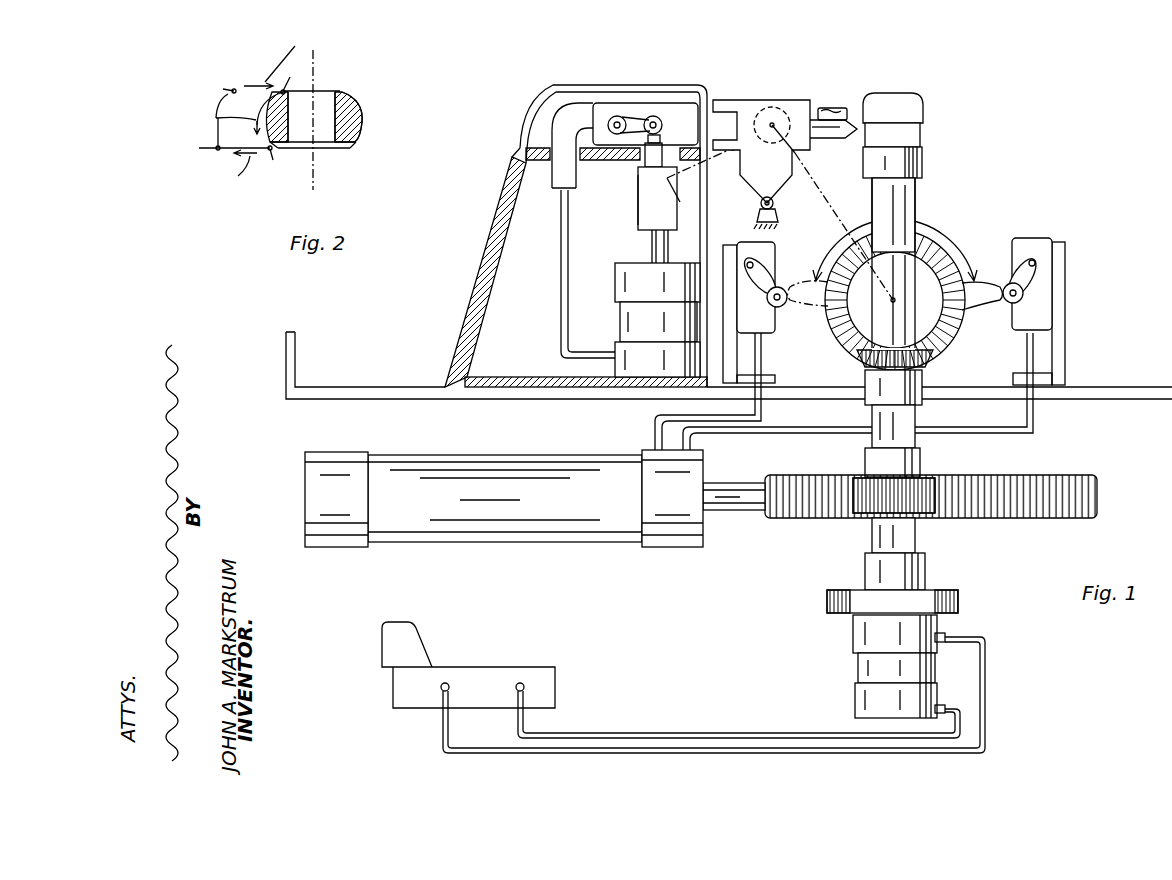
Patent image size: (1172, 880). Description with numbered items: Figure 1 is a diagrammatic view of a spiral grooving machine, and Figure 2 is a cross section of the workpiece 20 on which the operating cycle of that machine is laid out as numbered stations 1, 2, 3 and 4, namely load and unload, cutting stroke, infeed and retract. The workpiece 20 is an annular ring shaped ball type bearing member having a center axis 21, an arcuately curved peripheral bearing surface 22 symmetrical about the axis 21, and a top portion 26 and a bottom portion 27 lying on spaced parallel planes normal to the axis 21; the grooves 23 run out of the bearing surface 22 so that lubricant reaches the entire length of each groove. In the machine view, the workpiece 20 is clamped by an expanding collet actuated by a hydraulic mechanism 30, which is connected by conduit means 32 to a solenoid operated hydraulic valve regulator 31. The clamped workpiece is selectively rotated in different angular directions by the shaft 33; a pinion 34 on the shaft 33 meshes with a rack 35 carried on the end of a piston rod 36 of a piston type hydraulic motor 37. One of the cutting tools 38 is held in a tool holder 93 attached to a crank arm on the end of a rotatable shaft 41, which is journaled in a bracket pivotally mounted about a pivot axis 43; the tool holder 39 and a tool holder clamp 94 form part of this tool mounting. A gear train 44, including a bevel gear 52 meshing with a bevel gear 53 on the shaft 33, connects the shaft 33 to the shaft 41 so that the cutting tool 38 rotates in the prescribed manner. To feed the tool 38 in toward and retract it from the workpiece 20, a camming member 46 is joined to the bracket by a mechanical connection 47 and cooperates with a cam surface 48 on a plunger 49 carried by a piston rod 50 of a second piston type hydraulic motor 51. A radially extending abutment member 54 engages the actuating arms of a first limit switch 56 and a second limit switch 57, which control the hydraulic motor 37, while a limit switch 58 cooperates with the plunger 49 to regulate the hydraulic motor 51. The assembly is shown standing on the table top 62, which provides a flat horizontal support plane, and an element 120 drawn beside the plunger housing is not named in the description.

In FIG. 2, the load and unload step 1 is at (173, 156).
In FIG. 2, the cutting stroke step 2 is at (192, 118).
In FIG. 2, the infeed step 3 is at (262, 77).
In FIG. 2, the retract step 4 is at (253, 171).
In FIG. 2, the workpiece 20 is at (358, 120).
In FIG. 1, the workpiece 20 is at (906, 119).
In FIG. 2, the center axis 21 is at (313, 181).
In FIG. 2, the arcuately curved peripheral bearing surface 22 is at (360, 140).
In FIG. 2, the grooves 23 is at (356, 103).
In FIG. 2, the top portion 26 is at (338, 92).
In FIG. 2, the bottom portion 27 is at (342, 147).
In FIG. 1, the hydraulic mechanism 30 is at (945, 628).
In FIG. 1, the solenoid operated hydraulic valve regulator 31 is at (483, 668).
In FIG. 1, the conduit means 32 is at (632, 741).
In FIG. 1, the shaft 33 is at (916, 206).
In FIG. 1, the pinion 34 is at (930, 478).
In FIG. 1, the rack 35 is at (1010, 477).
In FIG. 1, the piston rod 36 is at (727, 507).
In FIG. 1, the piston type hydraulic motor 37 is at (518, 542).
In FIG. 1, the cutting tool 38 is at (851, 118).
In FIG. 1, the tool holder 39 is at (760, 108).
In FIG. 1, the rotatable shaft 41 is at (761, 151).
In FIG. 1, the pivot axis 43 is at (774, 205).
In FIG. 1, the gear train 44 is at (826, 200).
In FIG. 1, the camming member 46 is at (676, 200).
In FIG. 1, the mechanical connection 47 is at (718, 160).
In FIG. 1, the cam surface 48 is at (657, 182).
In FIG. 1, the plunger 49 is at (639, 190).
In FIG. 1, the piston rod 50 is at (670, 253).
In FIG. 1, the piston type hydraulic motor 51 is at (622, 325).
In FIG. 1, the bevel gear 52 is at (950, 340).
In FIG. 1, the bevel gear 53 is at (926, 360).
In FIG. 1, the radially extending abutment member 54 is at (975, 298).
In FIG. 1, the first limit switch 56 is at (1050, 280).
In FIG. 1, the second limit switch 57 is at (776, 322).
In FIG. 1, the limit switch 58 is at (600, 110).
In FIG. 1, the table top 62 is at (401, 388).
In FIG. 1, the tool holder 93 is at (776, 100).
In FIG. 1, the tool holder clamp 94 is at (828, 107).
In FIG. 1, the conduit 120 is at (555, 174).